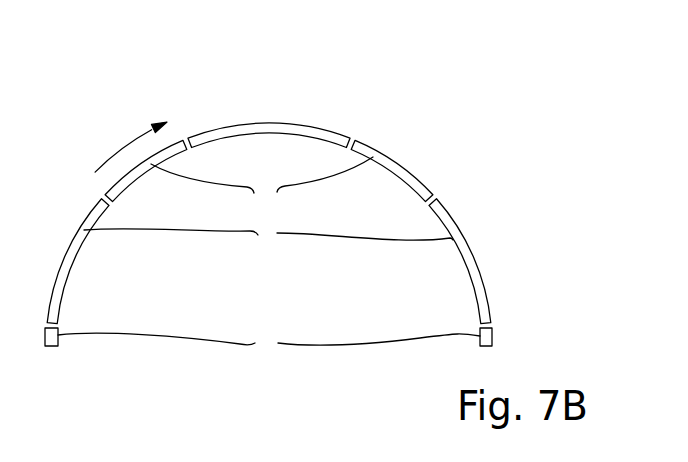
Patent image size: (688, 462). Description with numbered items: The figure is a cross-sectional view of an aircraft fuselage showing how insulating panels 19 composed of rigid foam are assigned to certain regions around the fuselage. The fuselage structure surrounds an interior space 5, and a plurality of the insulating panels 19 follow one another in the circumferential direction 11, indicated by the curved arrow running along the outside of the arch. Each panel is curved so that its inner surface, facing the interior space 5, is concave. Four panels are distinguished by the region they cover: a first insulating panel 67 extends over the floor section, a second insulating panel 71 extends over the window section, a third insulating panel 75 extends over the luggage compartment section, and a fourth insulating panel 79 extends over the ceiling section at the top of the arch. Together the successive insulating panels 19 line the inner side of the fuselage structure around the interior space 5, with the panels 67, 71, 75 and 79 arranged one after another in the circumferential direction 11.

The interior space 5 is at (275, 303).
The circumferential direction 11 is at (130, 142).
The insulating panels 19 is at (437, 200).
The first insulating panel 67 is at (269, 331).
The second insulating panel 71 is at (268, 251).
The third insulating panel 75 is at (262, 188).
The fourth insulating panel 79 is at (253, 127).